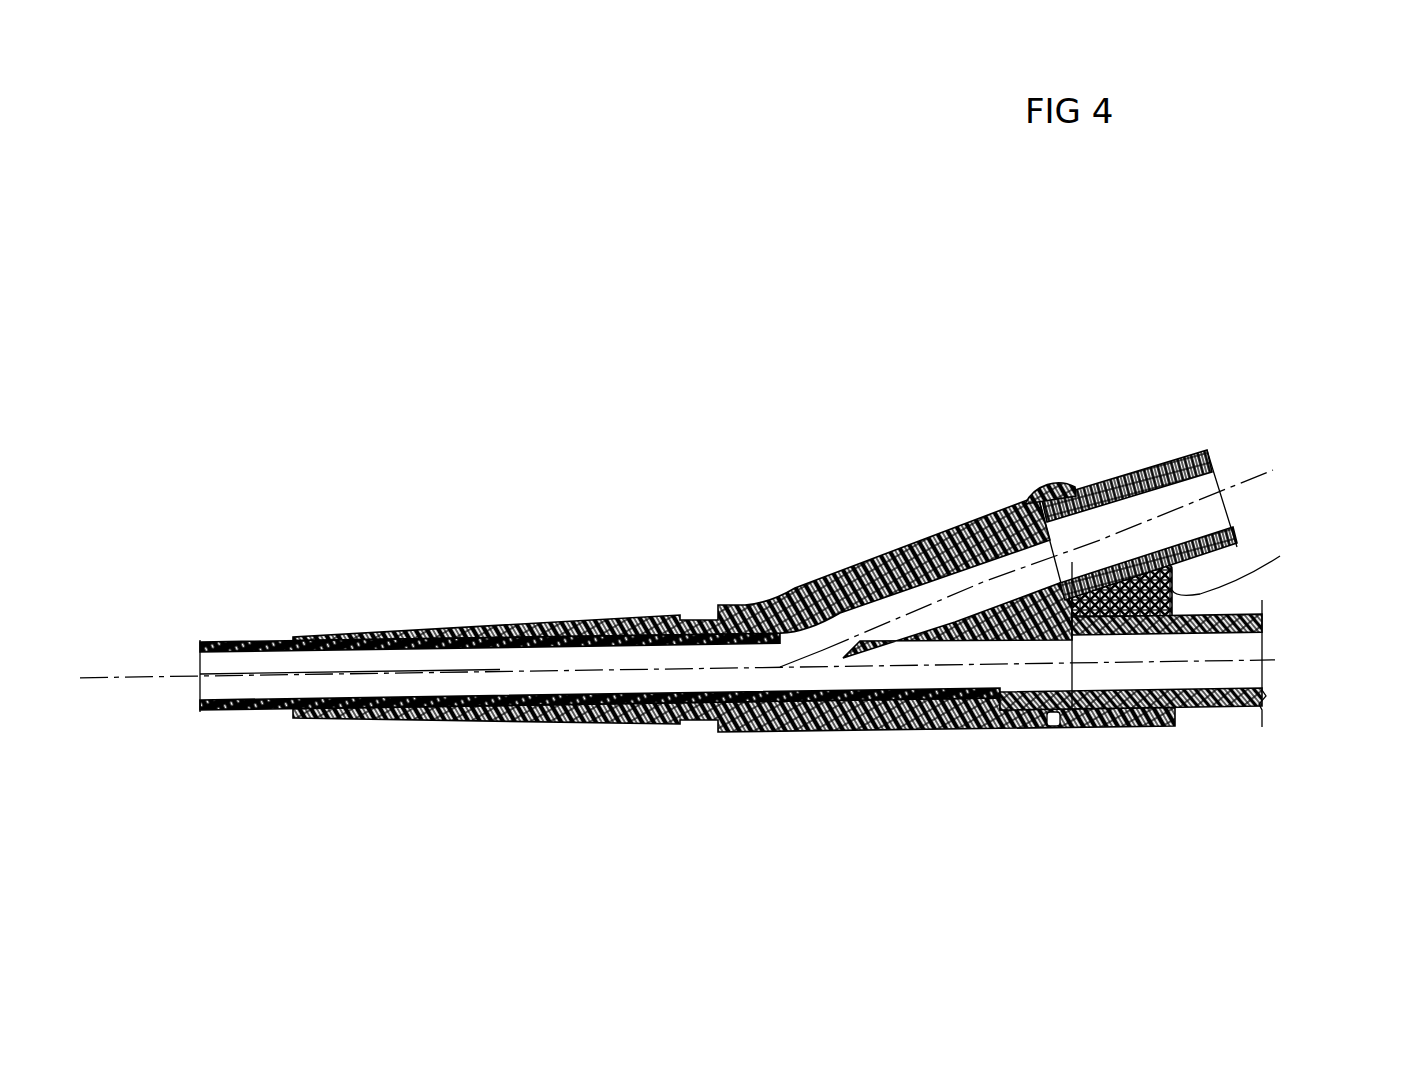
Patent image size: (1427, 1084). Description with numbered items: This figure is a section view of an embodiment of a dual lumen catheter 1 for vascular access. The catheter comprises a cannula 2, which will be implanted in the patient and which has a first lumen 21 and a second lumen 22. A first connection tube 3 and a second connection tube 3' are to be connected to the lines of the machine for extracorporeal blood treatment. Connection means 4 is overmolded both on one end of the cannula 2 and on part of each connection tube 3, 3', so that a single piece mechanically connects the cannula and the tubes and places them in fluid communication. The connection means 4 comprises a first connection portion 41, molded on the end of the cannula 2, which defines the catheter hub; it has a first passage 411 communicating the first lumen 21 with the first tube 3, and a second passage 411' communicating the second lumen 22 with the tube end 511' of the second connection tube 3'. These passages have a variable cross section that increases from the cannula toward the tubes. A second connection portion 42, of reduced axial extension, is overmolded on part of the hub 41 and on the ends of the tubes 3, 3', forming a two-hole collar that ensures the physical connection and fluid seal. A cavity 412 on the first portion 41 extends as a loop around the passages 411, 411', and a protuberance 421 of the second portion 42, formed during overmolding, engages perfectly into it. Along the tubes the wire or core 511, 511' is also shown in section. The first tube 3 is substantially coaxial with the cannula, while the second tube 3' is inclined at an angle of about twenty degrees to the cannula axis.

The catheter 1 is at (744, 555).
The cannula 2 is at (218, 641).
The first lumen 21 is at (258, 660).
The second lumen 22 is at (218, 707).
The first connection tube 3 is at (1145, 435).
The second connection tube 3' is at (1139, 748).
The connection means 4 is at (680, 470).
The first connection portion 41 is at (465, 720).
The first passage 411 is at (671, 493).
The second passage 411' is at (734, 752).
The cavity 412 is at (1048, 718).
The second connection portion 42 is at (1180, 595).
The protuberance 421 is at (1010, 517).
The wire in branch tube 511 is at (1187, 422).
The tube end 511' is at (1167, 796).